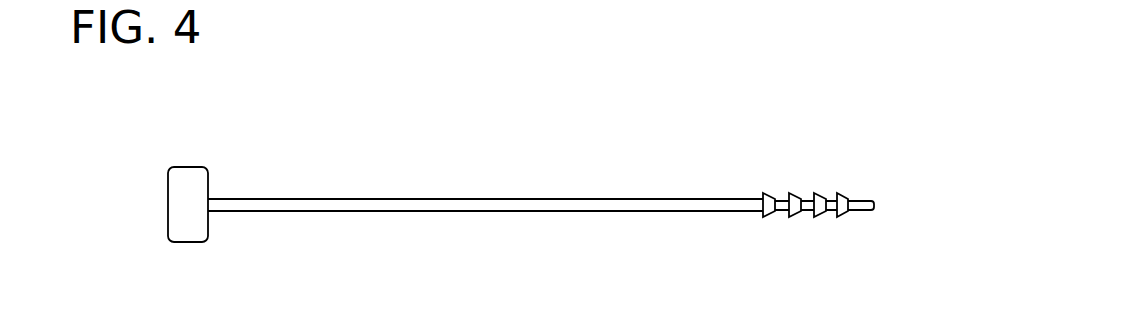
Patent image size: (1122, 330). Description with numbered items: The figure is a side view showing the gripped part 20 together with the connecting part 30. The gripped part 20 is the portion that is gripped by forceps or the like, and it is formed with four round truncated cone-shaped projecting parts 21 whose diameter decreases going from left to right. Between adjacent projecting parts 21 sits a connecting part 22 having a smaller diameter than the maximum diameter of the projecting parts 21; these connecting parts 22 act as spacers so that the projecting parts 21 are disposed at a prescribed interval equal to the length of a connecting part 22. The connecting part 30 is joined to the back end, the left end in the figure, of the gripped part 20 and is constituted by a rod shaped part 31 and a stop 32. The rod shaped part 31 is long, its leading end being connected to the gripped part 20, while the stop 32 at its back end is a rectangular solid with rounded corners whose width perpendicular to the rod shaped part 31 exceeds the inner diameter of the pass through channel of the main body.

The gripped part 20 is at (819, 192).
The projecting part 21 is at (790, 193).
The connecting part 22 is at (805, 200).
The connecting part 30 is at (483, 196).
The rod shaped part 31 is at (424, 212).
The stop 32 is at (188, 232).